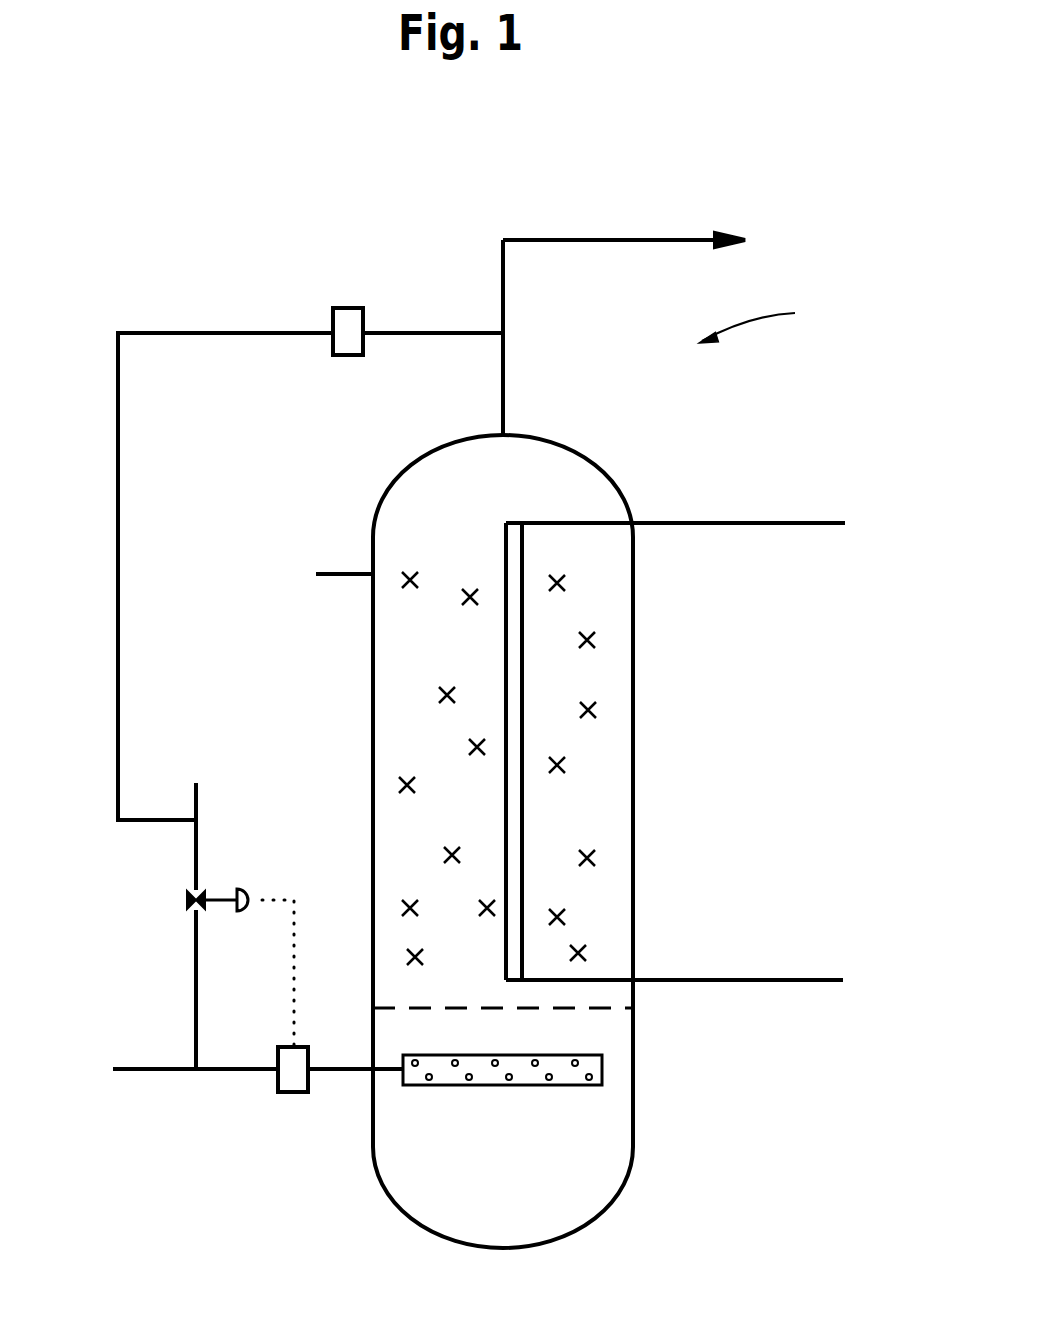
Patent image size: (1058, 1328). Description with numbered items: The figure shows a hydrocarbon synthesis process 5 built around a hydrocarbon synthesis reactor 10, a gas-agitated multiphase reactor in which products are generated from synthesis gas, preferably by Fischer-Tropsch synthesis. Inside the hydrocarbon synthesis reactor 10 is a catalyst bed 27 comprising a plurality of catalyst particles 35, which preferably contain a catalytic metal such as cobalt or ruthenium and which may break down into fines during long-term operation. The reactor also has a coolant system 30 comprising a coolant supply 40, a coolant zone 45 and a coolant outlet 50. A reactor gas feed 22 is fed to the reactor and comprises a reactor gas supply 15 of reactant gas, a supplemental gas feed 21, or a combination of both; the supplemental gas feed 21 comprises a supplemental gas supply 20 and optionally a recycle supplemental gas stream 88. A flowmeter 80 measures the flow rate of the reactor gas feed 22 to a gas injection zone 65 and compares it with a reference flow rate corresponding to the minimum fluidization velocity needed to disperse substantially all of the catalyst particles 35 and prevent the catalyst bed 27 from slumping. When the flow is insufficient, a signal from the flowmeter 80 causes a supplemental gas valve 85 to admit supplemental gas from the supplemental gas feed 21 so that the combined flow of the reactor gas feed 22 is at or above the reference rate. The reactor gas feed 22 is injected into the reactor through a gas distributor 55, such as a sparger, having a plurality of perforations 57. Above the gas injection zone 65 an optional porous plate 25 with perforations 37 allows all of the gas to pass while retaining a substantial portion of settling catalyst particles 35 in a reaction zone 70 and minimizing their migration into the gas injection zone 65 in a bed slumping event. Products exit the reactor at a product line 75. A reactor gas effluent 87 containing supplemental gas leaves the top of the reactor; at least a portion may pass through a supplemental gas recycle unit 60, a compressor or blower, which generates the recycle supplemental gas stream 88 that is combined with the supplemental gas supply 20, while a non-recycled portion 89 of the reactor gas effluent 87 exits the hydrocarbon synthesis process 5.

The hydrocarbon synthesis process 5 is at (763, 319).
The hydrocarbon synthesis reactor 10 is at (610, 483).
The reactor gas supply 15 is at (150, 1068).
The supplemental gas supply 20 is at (200, 803).
The supplemental gas feed 21 is at (196, 963).
The reactor gas feed 22 is at (217, 1070).
The porous plate 25 is at (593, 1010).
The catalyst bed 27 is at (613, 583).
The coolant system 30 is at (835, 968).
The catalyst particles 35 is at (590, 858).
The perforations 37 is at (392, 1008).
The coolant supply 40 is at (693, 980).
The coolant zone 45 is at (507, 785).
The coolant outlet 50 is at (805, 525).
The gas distributor 55 is at (600, 1088).
The perforations 57 is at (508, 1086).
The supplemental gas recycle unit 60 is at (348, 305).
The gas injection zone 65 is at (593, 1183).
The reaction zone 70 is at (403, 692).
The product line 75 is at (343, 572).
The flowmeter 80 is at (293, 1093).
The supplemental gas valve 85 is at (247, 888).
The reactor gas effluent 87 is at (503, 345).
The recycle supplemental gas stream 88 is at (178, 330).
The non-recycled portion 89 is at (625, 240).